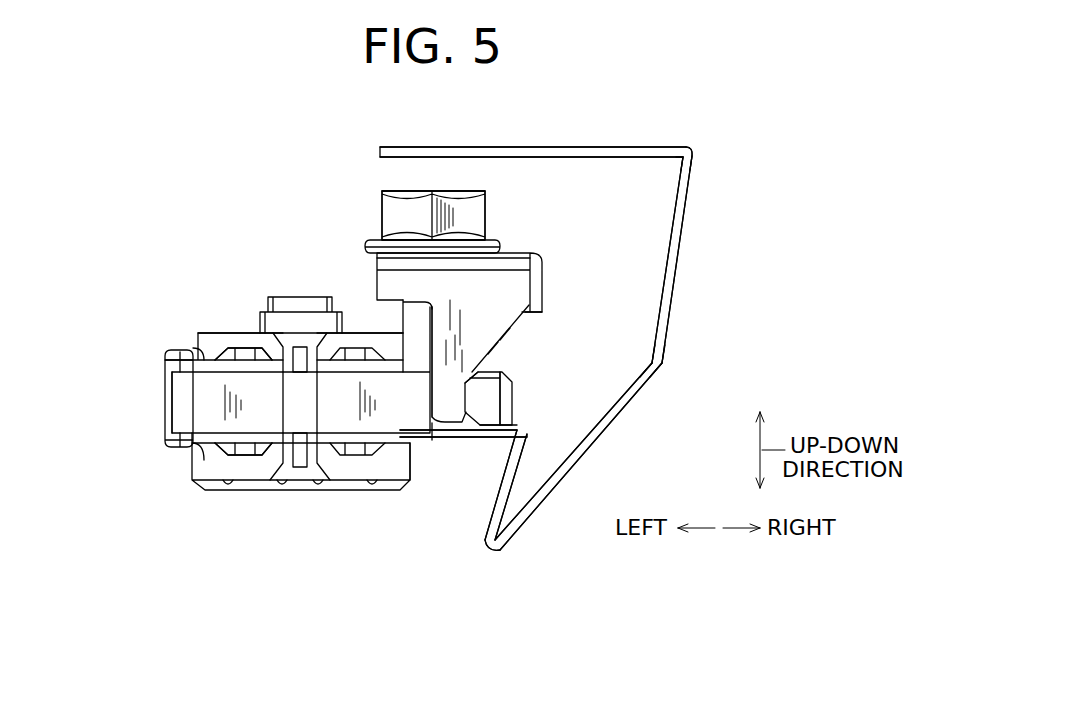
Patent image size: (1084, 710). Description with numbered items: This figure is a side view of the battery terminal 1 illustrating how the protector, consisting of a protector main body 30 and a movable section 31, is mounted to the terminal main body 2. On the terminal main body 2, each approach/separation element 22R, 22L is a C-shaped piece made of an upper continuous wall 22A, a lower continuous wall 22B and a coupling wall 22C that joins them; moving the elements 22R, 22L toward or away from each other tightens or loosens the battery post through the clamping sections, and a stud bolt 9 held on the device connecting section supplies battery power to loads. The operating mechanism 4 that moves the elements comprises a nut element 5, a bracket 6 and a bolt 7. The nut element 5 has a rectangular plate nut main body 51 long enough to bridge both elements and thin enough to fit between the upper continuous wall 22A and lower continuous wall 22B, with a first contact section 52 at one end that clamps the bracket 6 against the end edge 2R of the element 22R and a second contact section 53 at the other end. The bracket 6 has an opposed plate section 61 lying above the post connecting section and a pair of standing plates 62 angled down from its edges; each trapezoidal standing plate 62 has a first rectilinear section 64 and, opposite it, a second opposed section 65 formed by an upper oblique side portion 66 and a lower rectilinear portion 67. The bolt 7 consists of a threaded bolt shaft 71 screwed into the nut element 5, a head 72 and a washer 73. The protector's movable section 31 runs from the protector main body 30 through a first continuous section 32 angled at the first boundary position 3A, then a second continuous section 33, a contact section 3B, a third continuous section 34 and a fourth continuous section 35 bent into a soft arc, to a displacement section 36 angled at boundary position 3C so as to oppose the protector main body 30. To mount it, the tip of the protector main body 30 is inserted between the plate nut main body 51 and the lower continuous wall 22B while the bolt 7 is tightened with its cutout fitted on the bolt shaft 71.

The battery terminal 1 is at (797, 98).
The terminal main body 2 is at (198, 330).
The end edge 2R is at (436, 443).
The first boundary position 3A is at (525, 432).
The contact section 3B is at (494, 553).
The boundary position 3C is at (696, 151).
The operating mechanism 4 is at (790, 125).
The nut element 5 is at (517, 411).
The bracket 6 is at (531, 318).
The bolt 7 is at (463, 208).
The stud bolt 9 is at (298, 296).
The upper continuous wall 22A is at (210, 362).
The lower continuous wall 22B is at (187, 463).
The coupling wall 22C is at (193, 387).
The approach/separation element 22L is at (247, 390).
The approach/separation element 22R is at (357, 395).
The protector main body 30 is at (478, 432).
The movable section 31 is at (793, 230).
The first continuous section 32 is at (492, 504).
The second continuous section 33 is at (578, 462).
The third continuous section 34 is at (661, 372).
The fourth continuous section 35 is at (684, 220).
The displacement section 36 is at (540, 146).
The plate nut main body 51 is at (287, 409).
The first contact section 52 is at (513, 398).
The second contact section 53 is at (168, 407).
The opposed plate section 61 is at (532, 255).
The standing plate 62 is at (492, 324).
The first rectilinear section 64 is at (437, 326).
The second opposed section 65 is at (598, 342).
The oblique side portion 66 is at (497, 353).
The rectilinear portion 67 is at (498, 384).
The bolt shaft 71 is at (417, 318).
The head 72 is at (433, 215).
The washer 73 is at (497, 240).